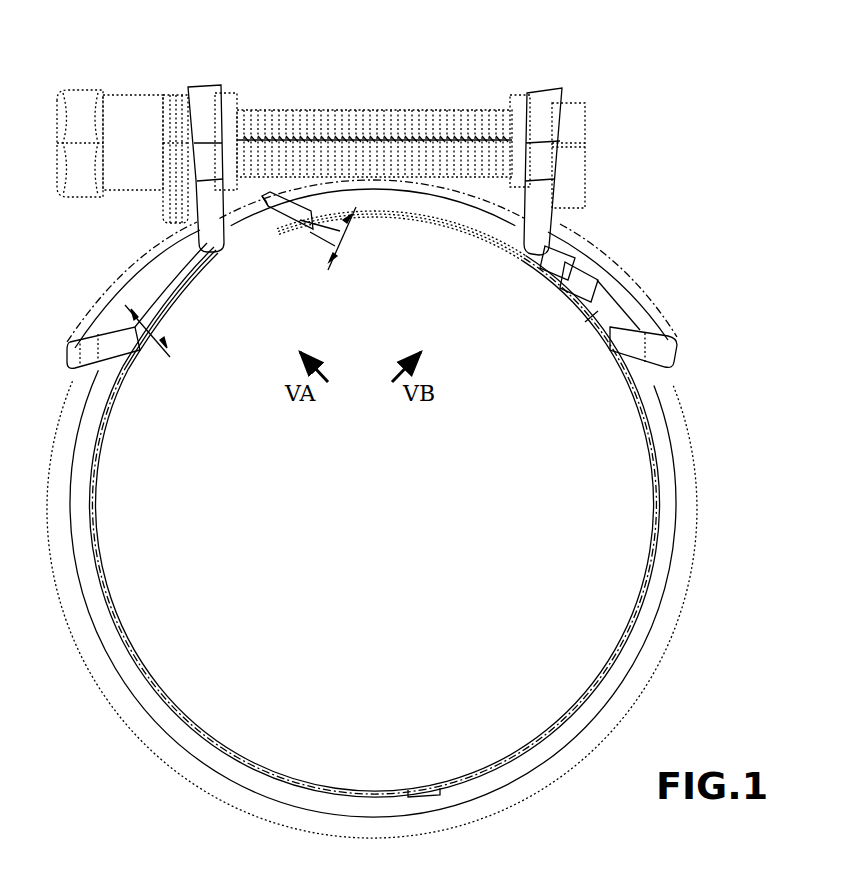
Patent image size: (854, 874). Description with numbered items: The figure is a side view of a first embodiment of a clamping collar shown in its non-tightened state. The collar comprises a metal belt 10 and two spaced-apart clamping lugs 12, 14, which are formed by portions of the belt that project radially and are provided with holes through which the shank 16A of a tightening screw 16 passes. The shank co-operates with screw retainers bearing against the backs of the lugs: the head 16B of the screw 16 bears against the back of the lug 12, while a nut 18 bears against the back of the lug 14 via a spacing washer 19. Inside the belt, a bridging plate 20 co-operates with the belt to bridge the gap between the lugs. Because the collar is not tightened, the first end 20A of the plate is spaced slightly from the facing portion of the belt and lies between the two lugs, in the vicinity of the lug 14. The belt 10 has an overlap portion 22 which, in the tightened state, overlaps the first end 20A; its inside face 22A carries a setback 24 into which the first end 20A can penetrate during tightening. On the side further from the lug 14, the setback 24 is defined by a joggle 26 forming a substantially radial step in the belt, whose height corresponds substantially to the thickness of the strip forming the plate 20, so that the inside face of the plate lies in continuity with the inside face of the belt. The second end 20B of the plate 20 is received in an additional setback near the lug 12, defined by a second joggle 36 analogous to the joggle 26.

The metal belt 10 is at (682, 420).
The clamping lug 12 is at (542, 95).
The clamping lug 14 is at (200, 90).
The tightening screw 16 is at (322, 103).
The shank 16A is at (418, 127).
The head of the screw 16B is at (574, 122).
The nut 18 is at (127, 108).
The spacing washer 19 is at (178, 100).
The bridging plate 20 is at (462, 212).
The first end of the plate 20A is at (300, 222).
The second end of the plate 20B is at (585, 315).
The overlap portion 22 is at (130, 284).
The inside face of the overlap portion 22A is at (180, 299).
The setback 24 is at (233, 236).
The joggle 26 is at (70, 358).
The second joggle 36 is at (682, 355).